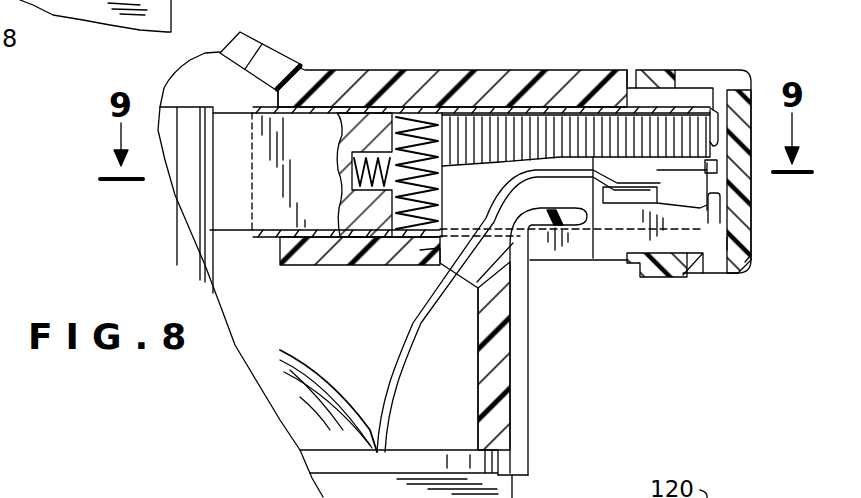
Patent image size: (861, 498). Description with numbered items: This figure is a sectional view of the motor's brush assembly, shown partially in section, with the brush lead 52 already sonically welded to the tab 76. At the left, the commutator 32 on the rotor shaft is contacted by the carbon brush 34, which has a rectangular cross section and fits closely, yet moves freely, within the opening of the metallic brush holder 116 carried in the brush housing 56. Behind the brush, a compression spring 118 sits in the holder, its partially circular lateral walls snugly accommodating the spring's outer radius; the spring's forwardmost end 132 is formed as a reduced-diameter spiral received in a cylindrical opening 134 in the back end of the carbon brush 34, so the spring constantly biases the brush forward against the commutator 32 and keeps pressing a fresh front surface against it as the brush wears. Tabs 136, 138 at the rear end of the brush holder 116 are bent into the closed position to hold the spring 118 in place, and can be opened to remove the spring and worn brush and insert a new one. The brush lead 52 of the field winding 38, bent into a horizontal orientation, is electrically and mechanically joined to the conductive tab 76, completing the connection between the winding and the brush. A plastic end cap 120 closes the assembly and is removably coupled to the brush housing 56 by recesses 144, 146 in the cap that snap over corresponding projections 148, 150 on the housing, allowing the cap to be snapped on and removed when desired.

The commutator 32 is at (177, 200).
The carbon brush 34 is at (298, 127).
The field winding 38 is at (270, 367).
The brush lead 52 is at (507, 197).
The brush housing 56 is at (508, 33).
The tab 76 is at (630, 195).
The metallic brush holder 116 is at (333, 153).
The compression spring 118 is at (543, 122).
The end cap 120 is at (753, 255).
The forwardmost end of spring 132 is at (372, 192).
The cylindrical opening 134 is at (388, 145).
The tab 136 is at (752, 112).
The tab 138 is at (748, 227).
The recess 144 is at (688, 274).
The recess 146 is at (682, 74).
The projection 148 is at (692, 250).
The projection 150 is at (675, 100).